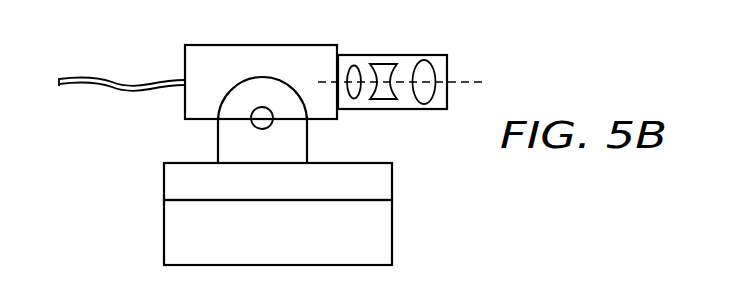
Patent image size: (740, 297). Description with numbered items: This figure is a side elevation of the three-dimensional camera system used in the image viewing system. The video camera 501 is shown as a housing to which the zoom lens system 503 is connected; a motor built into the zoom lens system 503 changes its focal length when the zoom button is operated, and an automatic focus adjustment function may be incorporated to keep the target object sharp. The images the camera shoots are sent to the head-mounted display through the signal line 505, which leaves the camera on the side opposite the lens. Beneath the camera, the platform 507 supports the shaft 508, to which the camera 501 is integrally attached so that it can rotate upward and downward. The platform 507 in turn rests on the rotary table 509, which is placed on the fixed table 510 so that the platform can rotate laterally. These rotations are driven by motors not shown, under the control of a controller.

The left video camera 501 is at (184, 60).
The zoom lens system 503 is at (405, 55).
The signal line 505 is at (82, 78).
The platform 507 is at (307, 137).
The shaft 508 is at (253, 125).
The rotary table 509 is at (392, 182).
The fixed table 510 is at (392, 240).